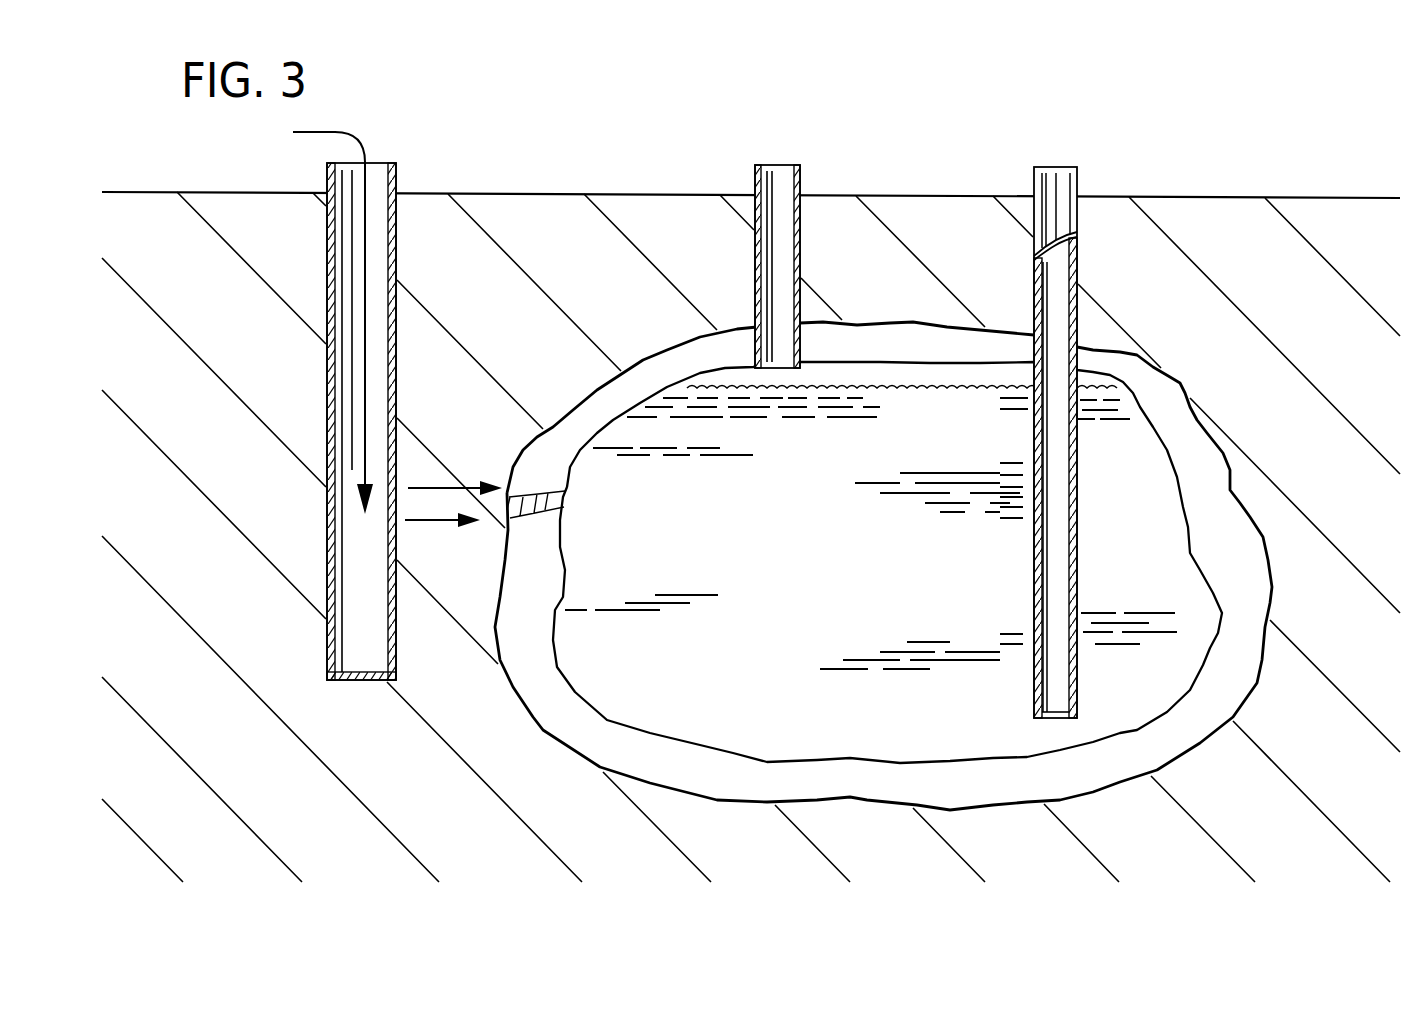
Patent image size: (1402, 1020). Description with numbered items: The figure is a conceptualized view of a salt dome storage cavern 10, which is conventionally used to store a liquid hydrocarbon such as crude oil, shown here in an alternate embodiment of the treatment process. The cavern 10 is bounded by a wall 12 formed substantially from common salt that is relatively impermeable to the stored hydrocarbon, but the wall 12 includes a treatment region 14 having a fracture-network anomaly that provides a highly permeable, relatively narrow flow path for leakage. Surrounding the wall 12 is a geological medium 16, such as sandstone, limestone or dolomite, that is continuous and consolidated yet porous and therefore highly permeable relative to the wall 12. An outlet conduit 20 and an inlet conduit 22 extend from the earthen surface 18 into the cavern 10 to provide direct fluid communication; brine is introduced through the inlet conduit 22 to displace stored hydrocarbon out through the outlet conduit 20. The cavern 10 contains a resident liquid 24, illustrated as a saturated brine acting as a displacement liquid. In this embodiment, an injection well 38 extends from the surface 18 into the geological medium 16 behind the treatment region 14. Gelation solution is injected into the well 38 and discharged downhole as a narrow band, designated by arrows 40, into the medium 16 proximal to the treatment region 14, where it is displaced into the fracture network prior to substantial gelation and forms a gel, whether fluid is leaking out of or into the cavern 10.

The salt dome storage cavern 10 is at (858, 752).
The cavern wall 12 is at (733, 752).
The treatment region 14 is at (567, 509).
The geological medium 16 is at (1026, 858).
The earthen surface 18 is at (503, 192).
The outlet conduit 20 is at (801, 174).
The inlet conduit 22 is at (1077, 181).
The resident liquid 24 is at (938, 558).
The injection well 38 is at (398, 184).
The arrows 40 is at (432, 527).